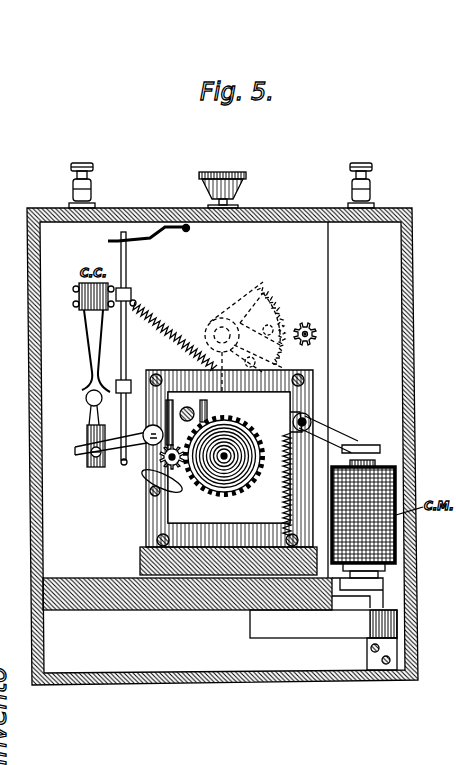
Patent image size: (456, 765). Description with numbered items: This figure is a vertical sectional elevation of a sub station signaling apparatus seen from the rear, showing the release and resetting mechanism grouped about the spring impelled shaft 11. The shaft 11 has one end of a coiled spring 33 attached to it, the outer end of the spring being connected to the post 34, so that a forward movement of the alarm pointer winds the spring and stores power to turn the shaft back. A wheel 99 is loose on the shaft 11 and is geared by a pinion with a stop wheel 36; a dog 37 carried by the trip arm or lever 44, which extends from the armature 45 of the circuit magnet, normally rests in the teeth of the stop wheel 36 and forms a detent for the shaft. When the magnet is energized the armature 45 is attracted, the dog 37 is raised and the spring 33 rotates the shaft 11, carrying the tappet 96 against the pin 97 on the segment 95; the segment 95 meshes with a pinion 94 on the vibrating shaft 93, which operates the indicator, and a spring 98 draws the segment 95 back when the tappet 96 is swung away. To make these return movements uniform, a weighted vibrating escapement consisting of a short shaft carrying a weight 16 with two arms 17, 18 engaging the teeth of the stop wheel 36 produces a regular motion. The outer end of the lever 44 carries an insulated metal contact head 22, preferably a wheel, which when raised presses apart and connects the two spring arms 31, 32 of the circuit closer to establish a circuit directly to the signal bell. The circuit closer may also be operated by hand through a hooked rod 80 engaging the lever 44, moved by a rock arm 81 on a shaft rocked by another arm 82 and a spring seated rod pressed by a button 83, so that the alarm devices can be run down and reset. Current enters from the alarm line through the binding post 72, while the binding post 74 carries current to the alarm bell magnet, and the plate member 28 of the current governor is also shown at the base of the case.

The binding post 72 is at (93, 196).
The binding post 74 is at (371, 195).
The button 83 is at (234, 174).
The hooked rod 80 is at (127, 262).
The rock arm 81 is at (108, 241).
The arm 82 is at (190, 229).
The spring arm 31 is at (89, 359).
The spring arm 32 is at (99, 355).
The contact head 22 is at (88, 400).
The lever 44 is at (75, 452).
The armature 45 is at (365, 445).
The shaft 11 is at (223, 462).
The coiled spring 33 is at (231, 480).
The wheel 99 is at (255, 484).
The dog 37 is at (166, 417).
The tappet 96 is at (212, 418).
The post 34 is at (187, 408).
The weight 16 is at (146, 429).
The arm 18 is at (178, 468).
The arm 17 is at (142, 474).
The stop wheel 36 is at (160, 493).
The segment 95 is at (272, 300).
The pin 97 is at (246, 367).
The pinion 94 is at (307, 326).
The vibrating shaft 93 is at (316, 335).
The spring 98 is at (172, 338).
The plate member 28 is at (323, 640).